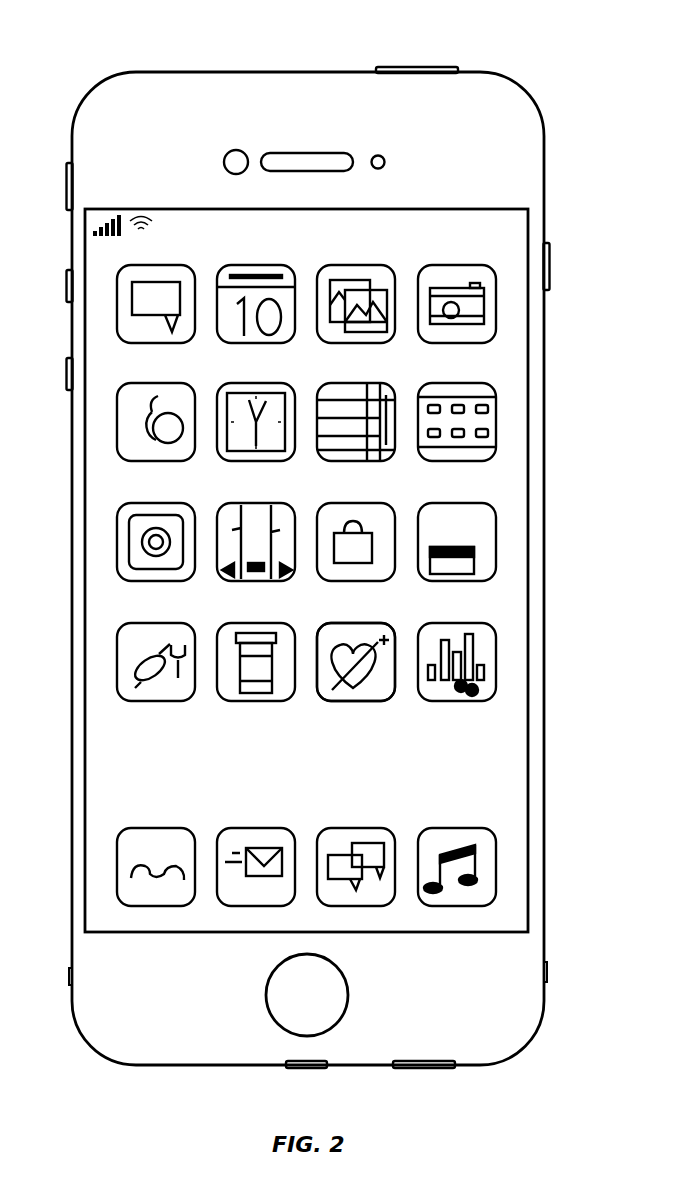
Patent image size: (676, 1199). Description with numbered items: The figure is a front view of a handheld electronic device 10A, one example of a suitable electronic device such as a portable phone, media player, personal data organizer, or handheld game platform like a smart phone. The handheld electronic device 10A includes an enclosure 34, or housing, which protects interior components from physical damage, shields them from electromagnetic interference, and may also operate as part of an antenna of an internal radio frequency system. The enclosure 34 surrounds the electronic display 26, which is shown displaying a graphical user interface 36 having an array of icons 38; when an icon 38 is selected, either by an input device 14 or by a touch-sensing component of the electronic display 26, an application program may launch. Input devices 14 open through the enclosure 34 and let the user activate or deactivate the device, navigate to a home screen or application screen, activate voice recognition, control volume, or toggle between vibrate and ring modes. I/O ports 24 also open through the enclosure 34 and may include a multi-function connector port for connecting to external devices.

The handheld electronic device 10A is at (74, 70).
The input devices 14 is at (417, 68).
The I/O ports 24 is at (162, 1068).
The electronic display 26 is at (530, 620).
The enclosure 34 is at (545, 160).
The graphical user interface 36 is at (514, 490).
The icons 38 is at (360, 703).